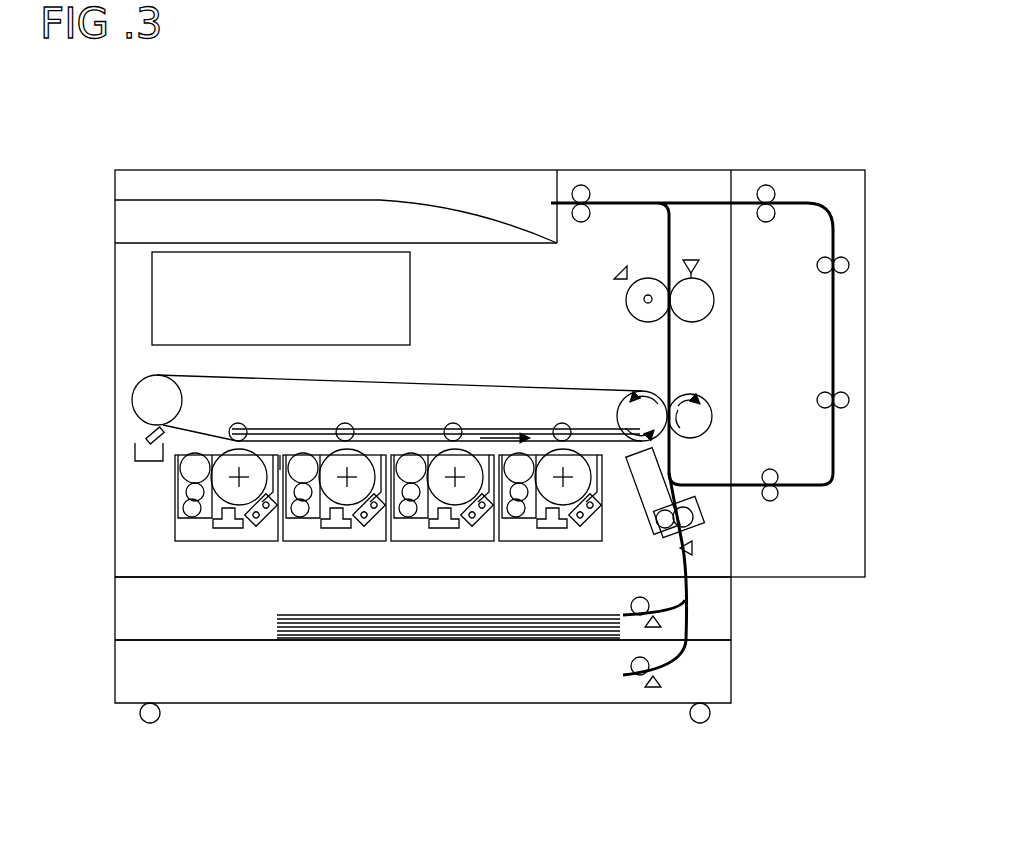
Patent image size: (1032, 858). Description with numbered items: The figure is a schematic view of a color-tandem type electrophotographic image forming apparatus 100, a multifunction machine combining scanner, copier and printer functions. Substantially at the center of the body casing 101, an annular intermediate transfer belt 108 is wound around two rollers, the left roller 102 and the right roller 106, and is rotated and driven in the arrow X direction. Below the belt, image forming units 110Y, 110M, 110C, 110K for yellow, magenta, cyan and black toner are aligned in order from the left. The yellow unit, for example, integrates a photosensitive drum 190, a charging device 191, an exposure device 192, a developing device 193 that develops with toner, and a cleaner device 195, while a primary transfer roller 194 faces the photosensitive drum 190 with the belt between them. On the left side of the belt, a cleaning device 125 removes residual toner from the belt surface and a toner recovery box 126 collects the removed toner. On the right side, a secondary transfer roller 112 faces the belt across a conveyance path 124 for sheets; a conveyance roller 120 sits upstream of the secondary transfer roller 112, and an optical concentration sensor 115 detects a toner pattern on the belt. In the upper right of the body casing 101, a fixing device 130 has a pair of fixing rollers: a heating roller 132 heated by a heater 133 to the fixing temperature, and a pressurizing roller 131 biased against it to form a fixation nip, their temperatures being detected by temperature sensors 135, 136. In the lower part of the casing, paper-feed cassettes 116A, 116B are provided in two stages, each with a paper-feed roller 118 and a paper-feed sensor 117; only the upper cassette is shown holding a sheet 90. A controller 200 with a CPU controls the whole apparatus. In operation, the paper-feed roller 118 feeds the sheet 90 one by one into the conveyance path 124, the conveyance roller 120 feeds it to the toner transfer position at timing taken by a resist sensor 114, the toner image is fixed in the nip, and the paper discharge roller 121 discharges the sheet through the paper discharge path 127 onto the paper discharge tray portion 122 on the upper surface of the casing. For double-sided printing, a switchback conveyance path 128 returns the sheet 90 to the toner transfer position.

The image forming apparatus 100 is at (82, 190).
The body casing 101 is at (115, 283).
The roller 102 is at (175, 395).
The roller 106 is at (637, 392).
The intermediate transfer belt 108 is at (430, 383).
The yellow image forming unit 110Y is at (240, 545).
The magenta image forming unit 110M is at (347, 545).
The cyan image forming unit 110C is at (455, 545).
The black image forming unit 110K is at (562, 545).
The secondary transfer roller 112 is at (694, 395).
The resist sensor 114 is at (692, 548).
The optical concentration sensor 115 is at (633, 478).
The paper-feed cassette 116A is at (724, 607).
The paper-feed cassette 116B is at (724, 667).
The paper-feed sensor 117 is at (661, 622).
The paper-feed roller 118 is at (631, 603).
The conveyance roller 120 is at (665, 522).
The paper discharge roller 121 is at (583, 185).
The paper discharge tray portion 122 is at (430, 207).
The conveyance path 124 is at (673, 470).
The cleaning device 125 is at (145, 438).
The toner recovery box 126 is at (135, 463).
The paper discharge path 127 is at (628, 203).
The switchback conveyance path 128 is at (836, 345).
The fixing device 130 is at (645, 265).
The pressurizing roller 131 is at (714, 298).
The heating roller 132 is at (626, 298).
The heater 133 is at (645, 303).
The temperature sensor 135 is at (692, 262).
The temperature sensor 136 is at (617, 275).
The photosensitive drum 190 is at (253, 450).
The charging device 191 is at (258, 525).
The exposure device 192 is at (213, 526).
The developing device 193 is at (183, 476).
The primary transfer roller 194 is at (237, 423).
The cleaner device 195 is at (279, 457).
The controller 200 is at (412, 300).
The sheet 90 is at (482, 615).